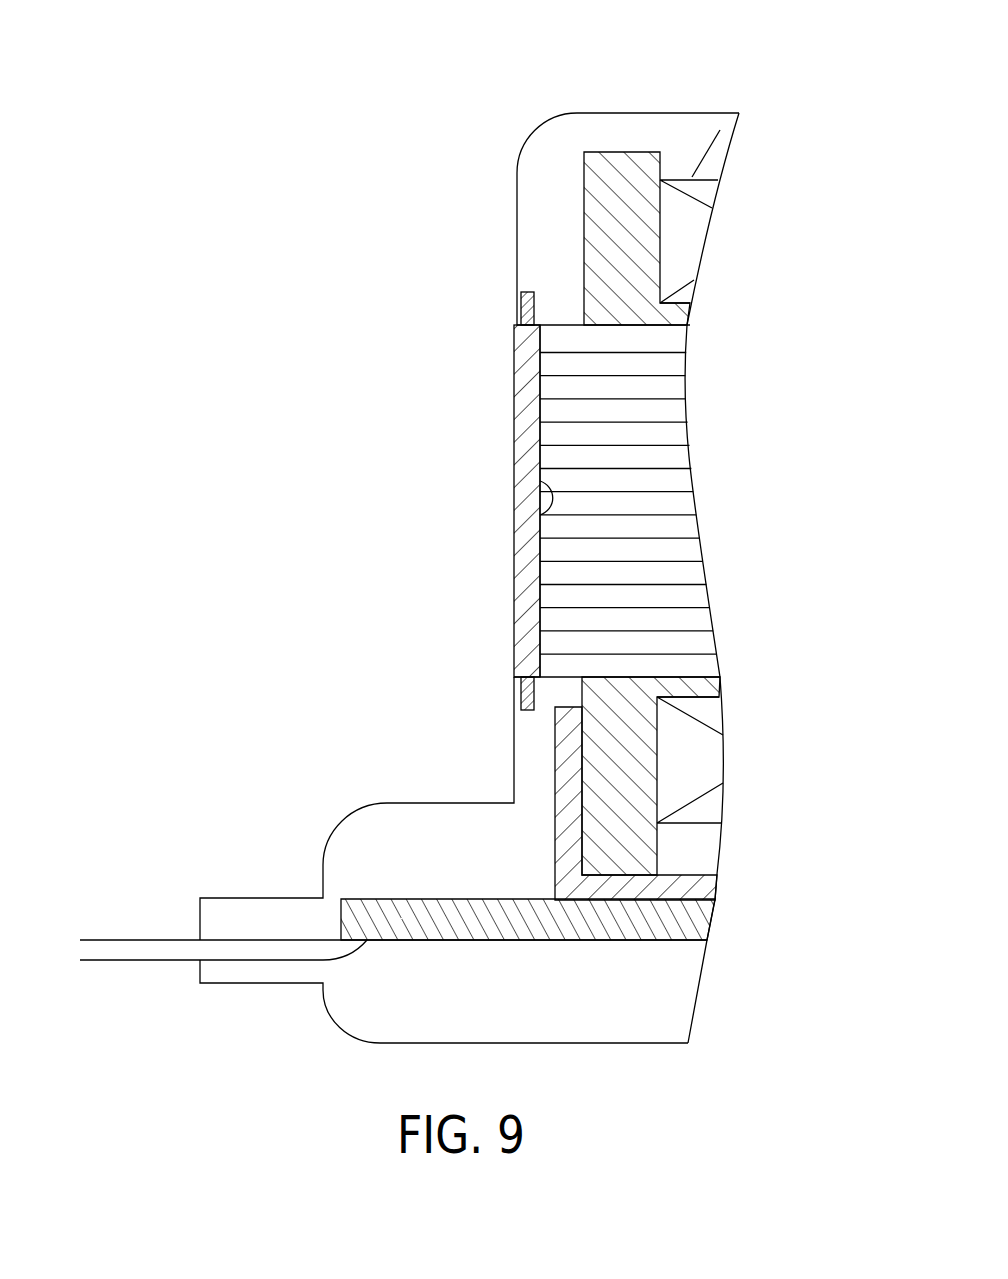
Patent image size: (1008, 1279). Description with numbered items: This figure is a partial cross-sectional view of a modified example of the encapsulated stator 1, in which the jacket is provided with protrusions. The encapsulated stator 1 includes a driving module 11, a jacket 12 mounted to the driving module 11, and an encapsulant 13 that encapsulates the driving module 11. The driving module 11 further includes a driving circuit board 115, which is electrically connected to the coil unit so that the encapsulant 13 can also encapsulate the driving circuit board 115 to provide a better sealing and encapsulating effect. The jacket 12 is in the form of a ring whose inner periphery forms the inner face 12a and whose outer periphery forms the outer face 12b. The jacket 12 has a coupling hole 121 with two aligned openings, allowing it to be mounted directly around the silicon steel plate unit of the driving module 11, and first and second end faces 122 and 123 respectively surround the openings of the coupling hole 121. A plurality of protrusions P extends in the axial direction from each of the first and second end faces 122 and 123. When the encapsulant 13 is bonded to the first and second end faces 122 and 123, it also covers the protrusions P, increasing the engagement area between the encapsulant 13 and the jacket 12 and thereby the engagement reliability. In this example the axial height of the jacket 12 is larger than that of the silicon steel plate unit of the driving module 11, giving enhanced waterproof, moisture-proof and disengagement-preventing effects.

The encapsulated stator 1 is at (475, 140).
The driving module 11 is at (692, 177).
The jacket 12 is at (477, 474).
The inner face 12a is at (540, 515).
The outer face 12b is at (514, 442).
The coupling hole 121 is at (568, 325).
The first end face 122 is at (516, 325).
The second end face 123 is at (521, 678).
The encapsulant 13 is at (605, 118).
The driving circuit board 115 is at (413, 918).
The protrusions P is at (524, 291).